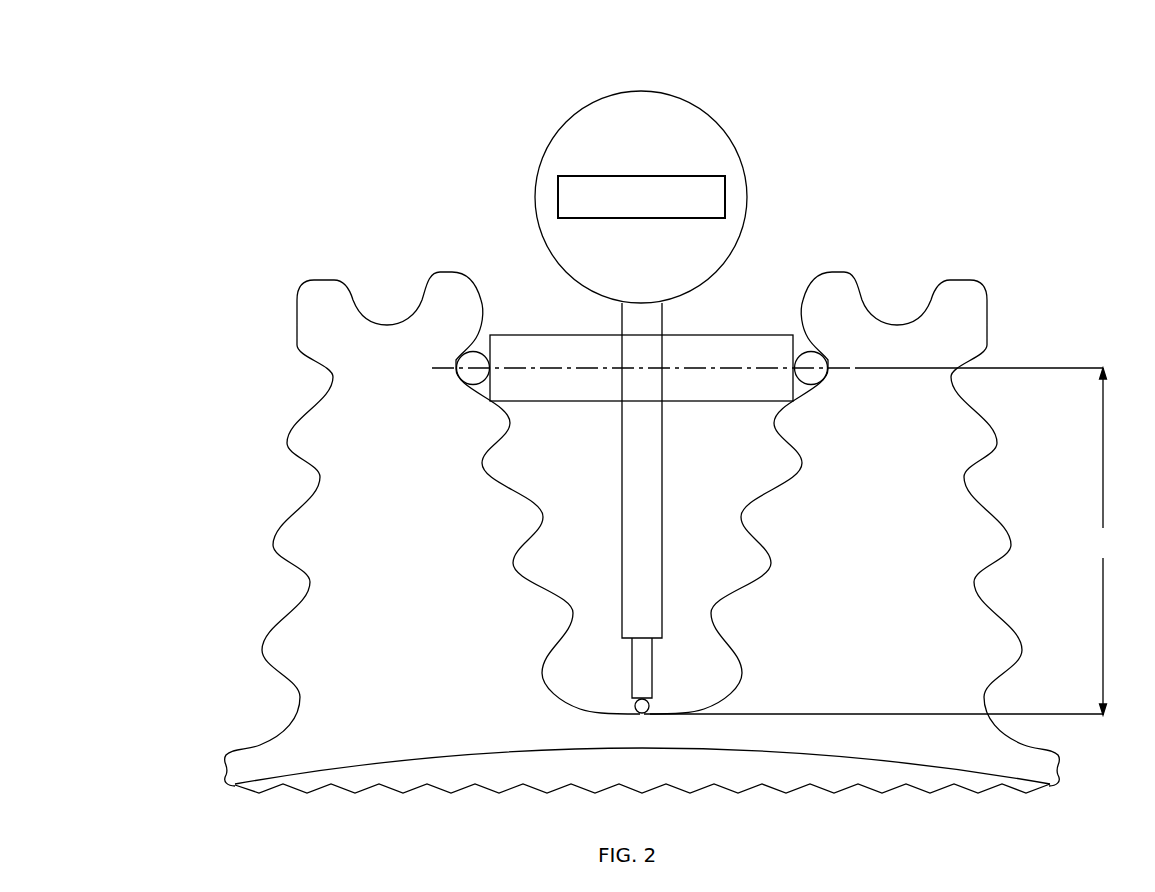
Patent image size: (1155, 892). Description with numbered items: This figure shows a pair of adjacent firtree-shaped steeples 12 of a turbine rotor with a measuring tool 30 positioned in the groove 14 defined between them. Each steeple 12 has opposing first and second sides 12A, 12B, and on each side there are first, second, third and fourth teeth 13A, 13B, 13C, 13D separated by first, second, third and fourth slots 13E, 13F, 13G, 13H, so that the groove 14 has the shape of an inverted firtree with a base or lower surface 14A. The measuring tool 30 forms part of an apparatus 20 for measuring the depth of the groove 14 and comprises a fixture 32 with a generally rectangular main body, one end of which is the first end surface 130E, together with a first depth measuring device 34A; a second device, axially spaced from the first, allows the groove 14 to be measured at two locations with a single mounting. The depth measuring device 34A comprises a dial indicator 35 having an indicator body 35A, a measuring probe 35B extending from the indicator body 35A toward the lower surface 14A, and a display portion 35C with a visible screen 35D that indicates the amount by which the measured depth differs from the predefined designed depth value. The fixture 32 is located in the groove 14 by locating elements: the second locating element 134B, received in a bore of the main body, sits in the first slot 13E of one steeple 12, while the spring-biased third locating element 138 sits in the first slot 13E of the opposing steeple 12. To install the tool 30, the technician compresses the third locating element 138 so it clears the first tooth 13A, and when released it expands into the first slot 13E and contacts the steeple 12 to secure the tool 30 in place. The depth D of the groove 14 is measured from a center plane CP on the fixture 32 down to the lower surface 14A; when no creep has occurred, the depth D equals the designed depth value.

The steeple 12 is at (368, 398).
The first side 12A is at (327, 293).
The second side 12B is at (447, 288).
The first tooth 13A is at (483, 328).
The second tooth 13B is at (287, 447).
The third tooth 13C is at (273, 546).
The fourth tooth 13D is at (262, 651).
The first slot 13E is at (333, 378).
The second slot 13F is at (320, 477).
The third slot 13G is at (310, 582).
The fourth slot 13H is at (300, 698).
The groove 14 is at (565, 685).
The lower surface 14A is at (600, 714).
The apparatus 20 is at (743, 112).
The measuring tool 30 is at (762, 135).
The fixture 32 is at (595, 340).
The first depth measuring device 34A is at (528, 157).
The dial indicator 35 is at (563, 110).
The indicator body 35A is at (662, 318).
The measuring probe 35B is at (652, 666).
The display portion 35C is at (678, 108).
The visible screen 35D is at (640, 176).
The first end surface 130E is at (572, 361).
The second locating element 134B is at (820, 360).
The third locating element 138 is at (465, 360).
The center plane CP is at (657, 370).
The depth D is at (983, 541).